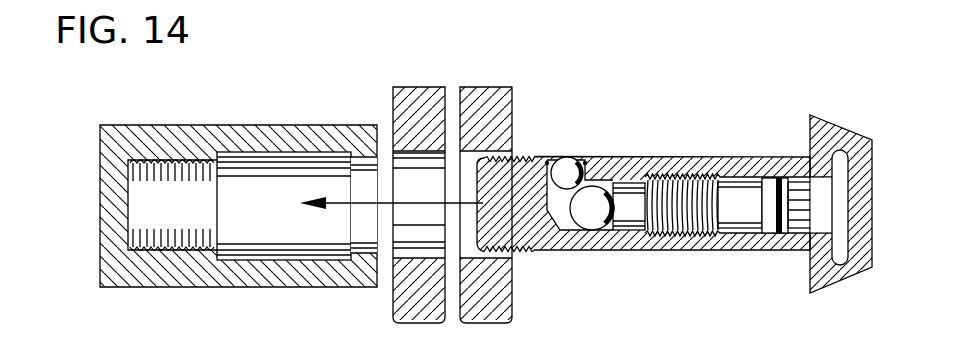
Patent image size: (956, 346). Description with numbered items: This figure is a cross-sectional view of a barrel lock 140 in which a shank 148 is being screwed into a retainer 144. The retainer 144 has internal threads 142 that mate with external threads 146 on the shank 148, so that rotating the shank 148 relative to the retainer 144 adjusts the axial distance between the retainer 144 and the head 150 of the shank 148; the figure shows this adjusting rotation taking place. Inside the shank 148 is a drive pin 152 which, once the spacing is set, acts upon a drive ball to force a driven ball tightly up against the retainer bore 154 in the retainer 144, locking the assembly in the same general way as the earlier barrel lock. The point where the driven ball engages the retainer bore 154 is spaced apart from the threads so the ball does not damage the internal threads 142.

The barrel lock 140 is at (674, 176).
The internal threads 142 is at (137, 240).
The retainer 144 is at (188, 125).
The external threads 146 is at (523, 157).
The shank 148 is at (637, 157).
The head 150 is at (843, 128).
The drive pin 152 is at (743, 228).
The retainer bore 154 is at (263, 152).